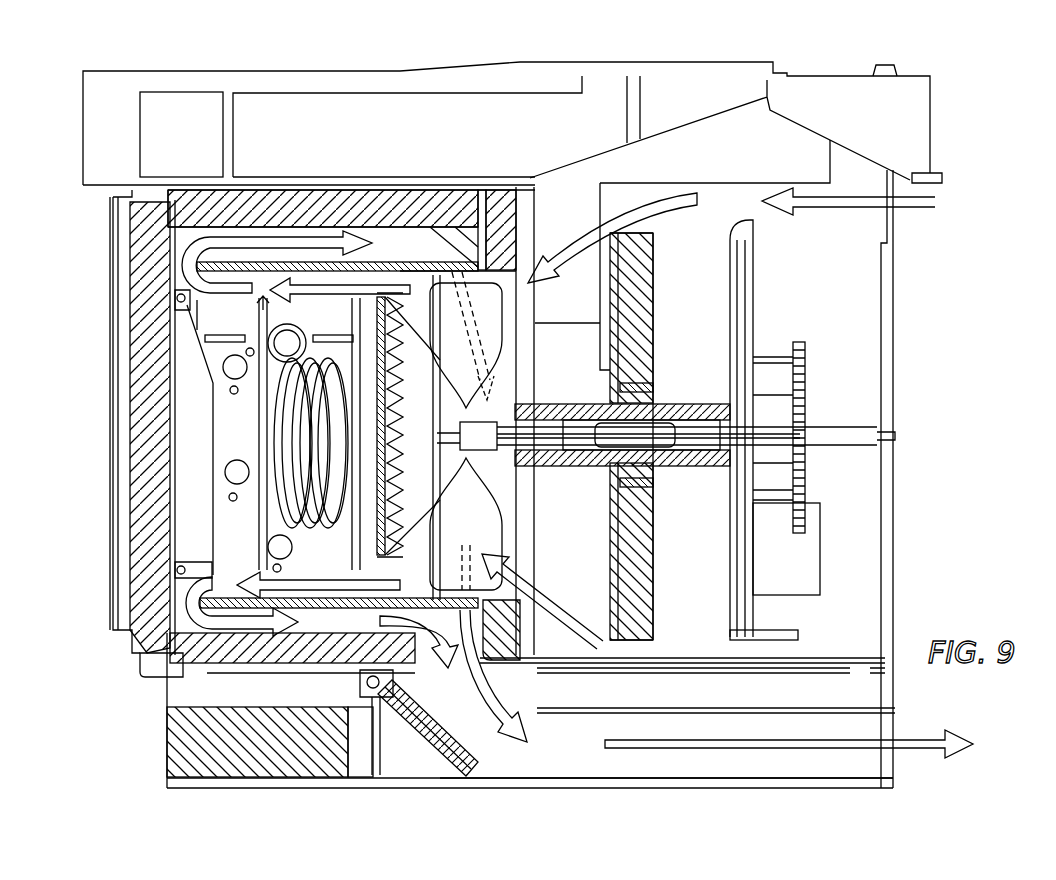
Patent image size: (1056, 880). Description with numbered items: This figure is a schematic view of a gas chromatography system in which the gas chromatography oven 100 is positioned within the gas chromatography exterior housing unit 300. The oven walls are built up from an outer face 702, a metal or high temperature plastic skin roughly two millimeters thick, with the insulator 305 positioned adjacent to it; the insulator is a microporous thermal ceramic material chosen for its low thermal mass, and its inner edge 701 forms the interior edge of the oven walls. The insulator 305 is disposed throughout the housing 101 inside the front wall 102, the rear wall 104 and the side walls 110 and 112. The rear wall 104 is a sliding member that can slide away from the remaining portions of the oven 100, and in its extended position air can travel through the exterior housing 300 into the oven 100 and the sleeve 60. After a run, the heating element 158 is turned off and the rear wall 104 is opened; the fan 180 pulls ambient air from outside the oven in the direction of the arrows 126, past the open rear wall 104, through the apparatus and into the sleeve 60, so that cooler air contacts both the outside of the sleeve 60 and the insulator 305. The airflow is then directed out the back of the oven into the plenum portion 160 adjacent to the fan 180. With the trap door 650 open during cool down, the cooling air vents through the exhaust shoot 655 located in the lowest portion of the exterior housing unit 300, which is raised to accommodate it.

The exterior housing unit 300 is at (300, 70).
The inner edge of insulator 701 is at (190, 222).
The side wall 112 is at (220, 205).
The insulator 305 is at (262, 215).
The sleeve 60 is at (304, 262).
The arrows 126 is at (350, 235).
The outer face 702 is at (450, 187).
The fan 180 is at (500, 300).
The rear wall 104 is at (648, 352).
The housing 101 is at (108, 298).
The gas chromatography oven 100 is at (113, 403).
The front wall 102 is at (145, 527).
The heating element 158 is at (385, 515).
The plenum portion 160 is at (500, 497).
The side wall 110 is at (305, 650).
The trap door 650 is at (420, 715).
The exhaust shoot 655 is at (712, 782).